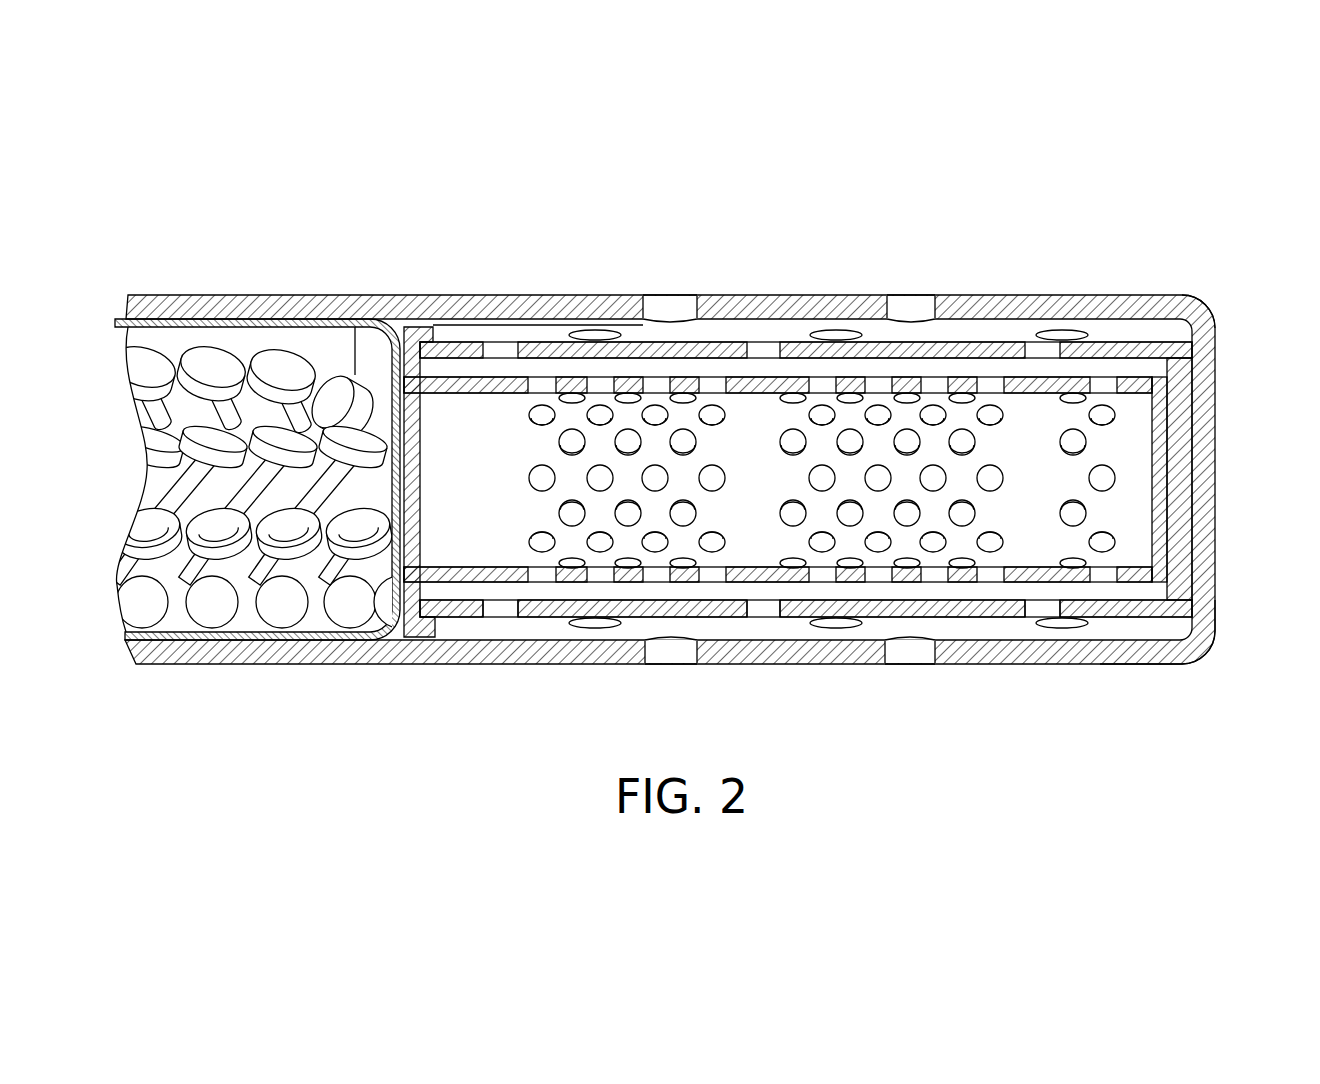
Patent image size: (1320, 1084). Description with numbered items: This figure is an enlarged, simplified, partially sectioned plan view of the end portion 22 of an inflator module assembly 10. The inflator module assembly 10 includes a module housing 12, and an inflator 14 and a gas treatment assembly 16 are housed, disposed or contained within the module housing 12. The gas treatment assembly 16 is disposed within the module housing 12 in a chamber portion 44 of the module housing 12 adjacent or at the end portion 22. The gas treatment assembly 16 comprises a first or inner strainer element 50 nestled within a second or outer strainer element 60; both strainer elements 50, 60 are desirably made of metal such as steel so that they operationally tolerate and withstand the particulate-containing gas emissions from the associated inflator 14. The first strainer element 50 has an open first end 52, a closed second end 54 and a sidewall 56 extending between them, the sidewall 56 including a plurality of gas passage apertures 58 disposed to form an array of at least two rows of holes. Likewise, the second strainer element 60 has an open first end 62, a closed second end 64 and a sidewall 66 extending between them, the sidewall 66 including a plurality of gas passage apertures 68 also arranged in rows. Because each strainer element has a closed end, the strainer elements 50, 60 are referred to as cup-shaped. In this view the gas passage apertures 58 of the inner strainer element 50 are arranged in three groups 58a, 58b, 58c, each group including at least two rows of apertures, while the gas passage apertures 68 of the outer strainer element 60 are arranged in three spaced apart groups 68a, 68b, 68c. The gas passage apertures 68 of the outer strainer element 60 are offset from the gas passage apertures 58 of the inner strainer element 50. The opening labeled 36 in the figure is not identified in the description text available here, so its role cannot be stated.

The inflator module assembly 10 is at (1135, 262).
The module housing 12 is at (428, 292).
The inflator 14 is at (355, 357).
The gas treatment assembly 16 is at (1120, 440).
The end portion 22 is at (1152, 695).
The inlet opening 36 is at (910, 310).
The chamber portion 44 is at (1082, 620).
The first strainer element 50 is at (445, 580).
The open first end 52 is at (412, 548).
The closed second end 54 is at (1163, 518).
The sidewall 56 is at (795, 582).
The gas passage apertures 58 is at (530, 468).
The group of apertures 58a is at (566, 426).
The group of apertures 58b is at (850, 427).
The group of apertures 58c is at (1064, 427).
The second strainer element 60 is at (463, 619).
The open first end 62 is at (405, 570).
The closed second end 64 is at (1180, 478).
The sidewall 66 is at (712, 620).
The gas passage apertures 68 is at (765, 348).
The group of apertures 68a is at (501, 612).
The group of apertures 68b is at (762, 621).
The group of apertures 68c is at (1040, 622).